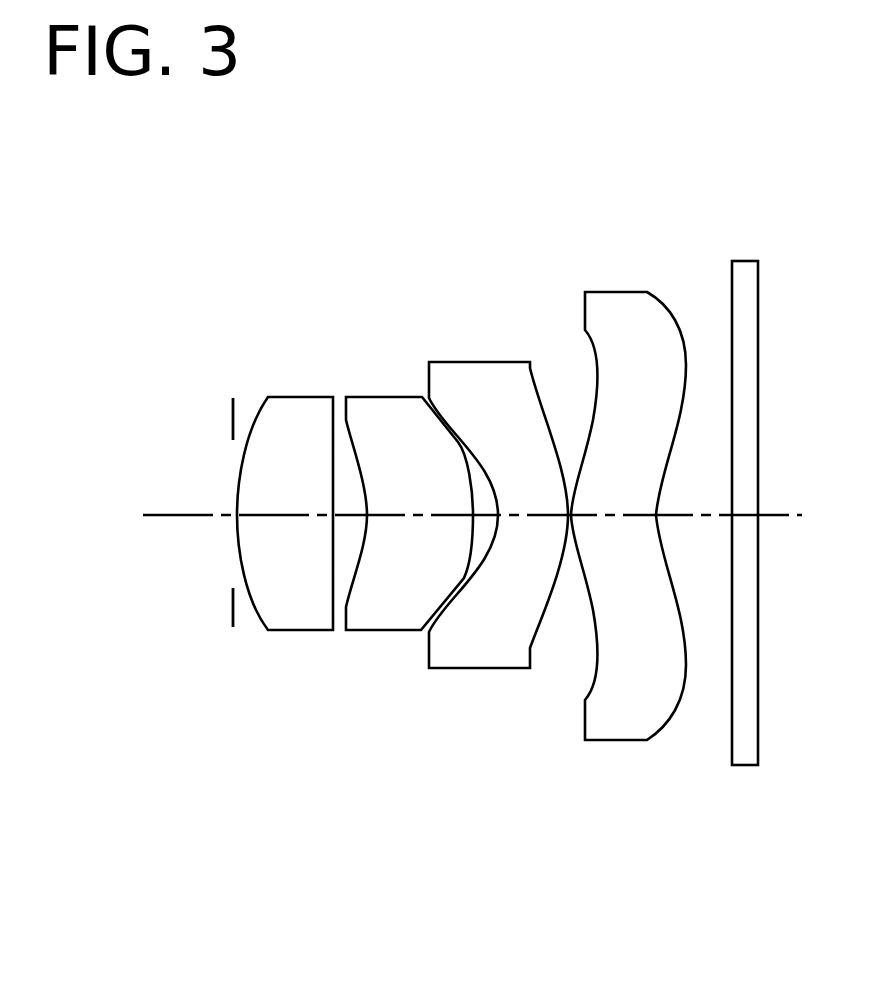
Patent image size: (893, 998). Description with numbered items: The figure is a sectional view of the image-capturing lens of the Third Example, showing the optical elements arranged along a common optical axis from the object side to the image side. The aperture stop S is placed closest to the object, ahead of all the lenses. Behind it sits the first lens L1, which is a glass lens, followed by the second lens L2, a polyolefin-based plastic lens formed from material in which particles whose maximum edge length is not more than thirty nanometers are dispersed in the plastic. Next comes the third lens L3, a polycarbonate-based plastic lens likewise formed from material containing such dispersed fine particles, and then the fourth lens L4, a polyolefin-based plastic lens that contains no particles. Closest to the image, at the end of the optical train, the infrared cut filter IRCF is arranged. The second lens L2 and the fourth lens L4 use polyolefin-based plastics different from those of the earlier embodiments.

The aperture stop S is at (233, 396).
The first lens L1 is at (300, 397).
The second lens L2 is at (383, 397).
The third lens L3 is at (480, 362).
The fourth lens L4 is at (617, 292).
The infrared cut filter IRCF is at (744, 765).